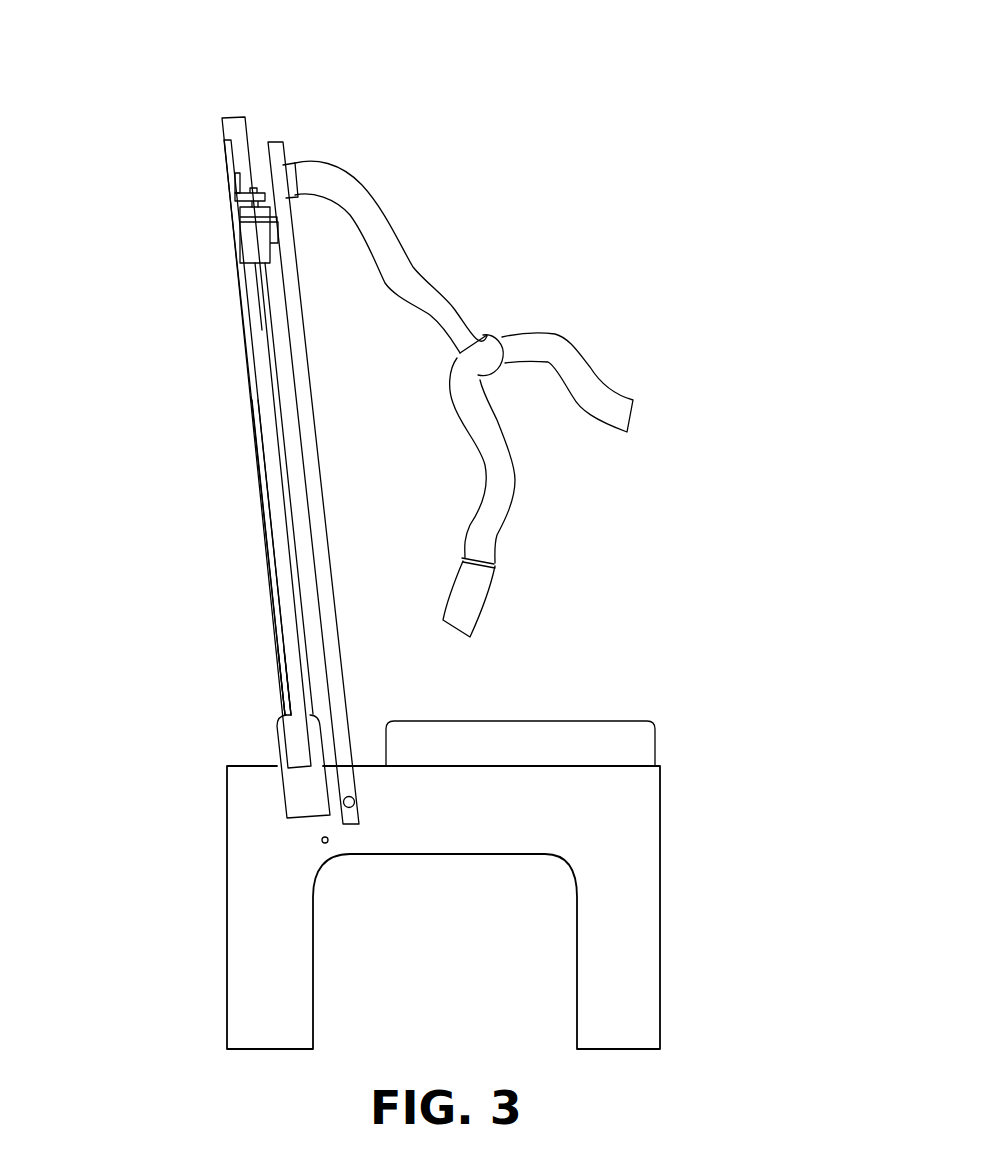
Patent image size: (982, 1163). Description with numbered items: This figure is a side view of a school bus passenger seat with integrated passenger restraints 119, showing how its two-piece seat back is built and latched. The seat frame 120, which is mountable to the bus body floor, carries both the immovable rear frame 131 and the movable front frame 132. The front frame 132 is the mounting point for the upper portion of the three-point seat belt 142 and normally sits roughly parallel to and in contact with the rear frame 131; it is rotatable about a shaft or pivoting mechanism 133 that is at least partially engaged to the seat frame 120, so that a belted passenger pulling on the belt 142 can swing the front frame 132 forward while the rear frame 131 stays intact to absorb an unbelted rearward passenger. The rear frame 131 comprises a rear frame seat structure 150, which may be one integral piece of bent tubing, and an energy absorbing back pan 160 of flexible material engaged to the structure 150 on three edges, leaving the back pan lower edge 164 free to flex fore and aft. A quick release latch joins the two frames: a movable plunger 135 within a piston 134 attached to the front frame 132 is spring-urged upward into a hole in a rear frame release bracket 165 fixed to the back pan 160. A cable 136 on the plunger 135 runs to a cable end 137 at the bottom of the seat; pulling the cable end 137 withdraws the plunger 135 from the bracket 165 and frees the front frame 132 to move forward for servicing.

The passenger seat with integrated passenger restraints 119 is at (660, 823).
The seat frame 120 is at (637, 930).
The rear frame 131 is at (244, 117).
The front frame 132 is at (311, 370).
The shaft or pivoting mechanism 133 is at (354, 803).
The piston 134 is at (241, 254).
The plunger 135 is at (244, 200).
The cable 136 is at (297, 553).
The cable end 137 is at (318, 842).
The three-point seat belt 142 is at (433, 275).
The rear frame seat structure 150 is at (218, 121).
The energy absorbing back pan 160 is at (256, 427).
The back pan lower edge 164 is at (280, 694).
The rear frame release bracket 165 is at (234, 193).